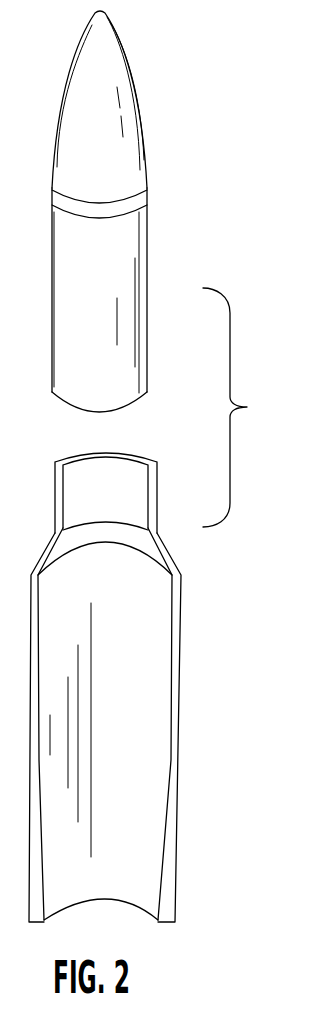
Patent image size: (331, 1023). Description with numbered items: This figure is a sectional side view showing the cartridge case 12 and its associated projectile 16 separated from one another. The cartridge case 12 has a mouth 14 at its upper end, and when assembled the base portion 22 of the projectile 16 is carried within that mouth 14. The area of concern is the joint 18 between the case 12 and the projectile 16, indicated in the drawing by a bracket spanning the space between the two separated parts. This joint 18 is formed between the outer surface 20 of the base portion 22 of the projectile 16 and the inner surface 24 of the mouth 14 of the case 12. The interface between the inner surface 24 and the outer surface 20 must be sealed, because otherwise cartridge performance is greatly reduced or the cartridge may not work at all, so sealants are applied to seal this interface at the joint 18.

The cartridge case 12 is at (175, 721).
The mouth 14 is at (109, 473).
The projectile 16 is at (114, 79).
The joint 18 is at (241, 407).
The outer surface 20 is at (122, 320).
The base portion 22 is at (84, 356).
The inner surface 24 is at (133, 488).